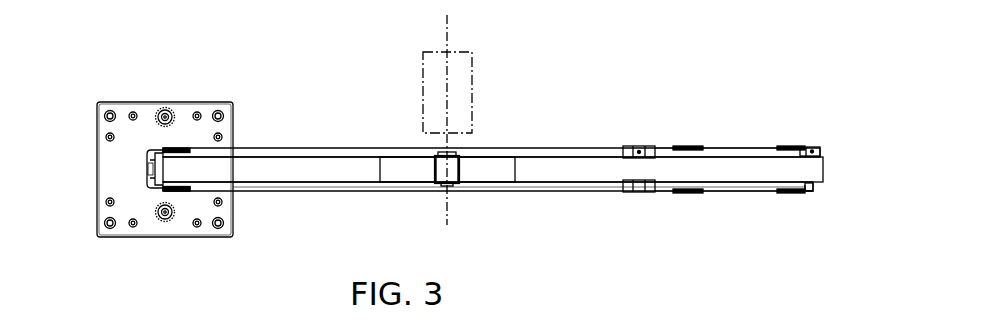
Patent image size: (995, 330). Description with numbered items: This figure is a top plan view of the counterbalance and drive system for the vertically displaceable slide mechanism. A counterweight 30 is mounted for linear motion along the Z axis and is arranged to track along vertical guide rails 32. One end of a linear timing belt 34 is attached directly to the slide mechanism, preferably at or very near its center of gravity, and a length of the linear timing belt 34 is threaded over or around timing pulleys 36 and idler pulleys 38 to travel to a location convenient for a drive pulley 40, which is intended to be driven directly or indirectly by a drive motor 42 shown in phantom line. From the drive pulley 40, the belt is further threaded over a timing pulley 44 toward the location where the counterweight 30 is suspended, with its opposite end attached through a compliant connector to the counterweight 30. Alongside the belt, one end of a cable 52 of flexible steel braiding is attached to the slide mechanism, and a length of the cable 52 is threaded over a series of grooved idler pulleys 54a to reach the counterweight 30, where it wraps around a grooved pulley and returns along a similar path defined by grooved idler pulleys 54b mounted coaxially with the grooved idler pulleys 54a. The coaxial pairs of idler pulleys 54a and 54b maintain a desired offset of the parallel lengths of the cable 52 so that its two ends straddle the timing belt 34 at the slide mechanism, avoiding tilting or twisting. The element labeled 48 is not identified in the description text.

The counterweight 30 is at (118, 175).
The vertical guide rails 32 is at (161, 109).
The linear timing belt 34 is at (566, 184).
The timing pulleys 36 is at (641, 184).
The idler pulleys 38 is at (492, 157).
The drive pulley 40 is at (455, 186).
The drive motor 42 is at (423, 90).
The timing pulley 44 is at (177, 150).
The rail assembly 48 is at (322, 148).
The cable 52 is at (742, 148).
The grooved idler pulleys 54a is at (178, 195).
The grooved idler pulleys 54b is at (693, 146).